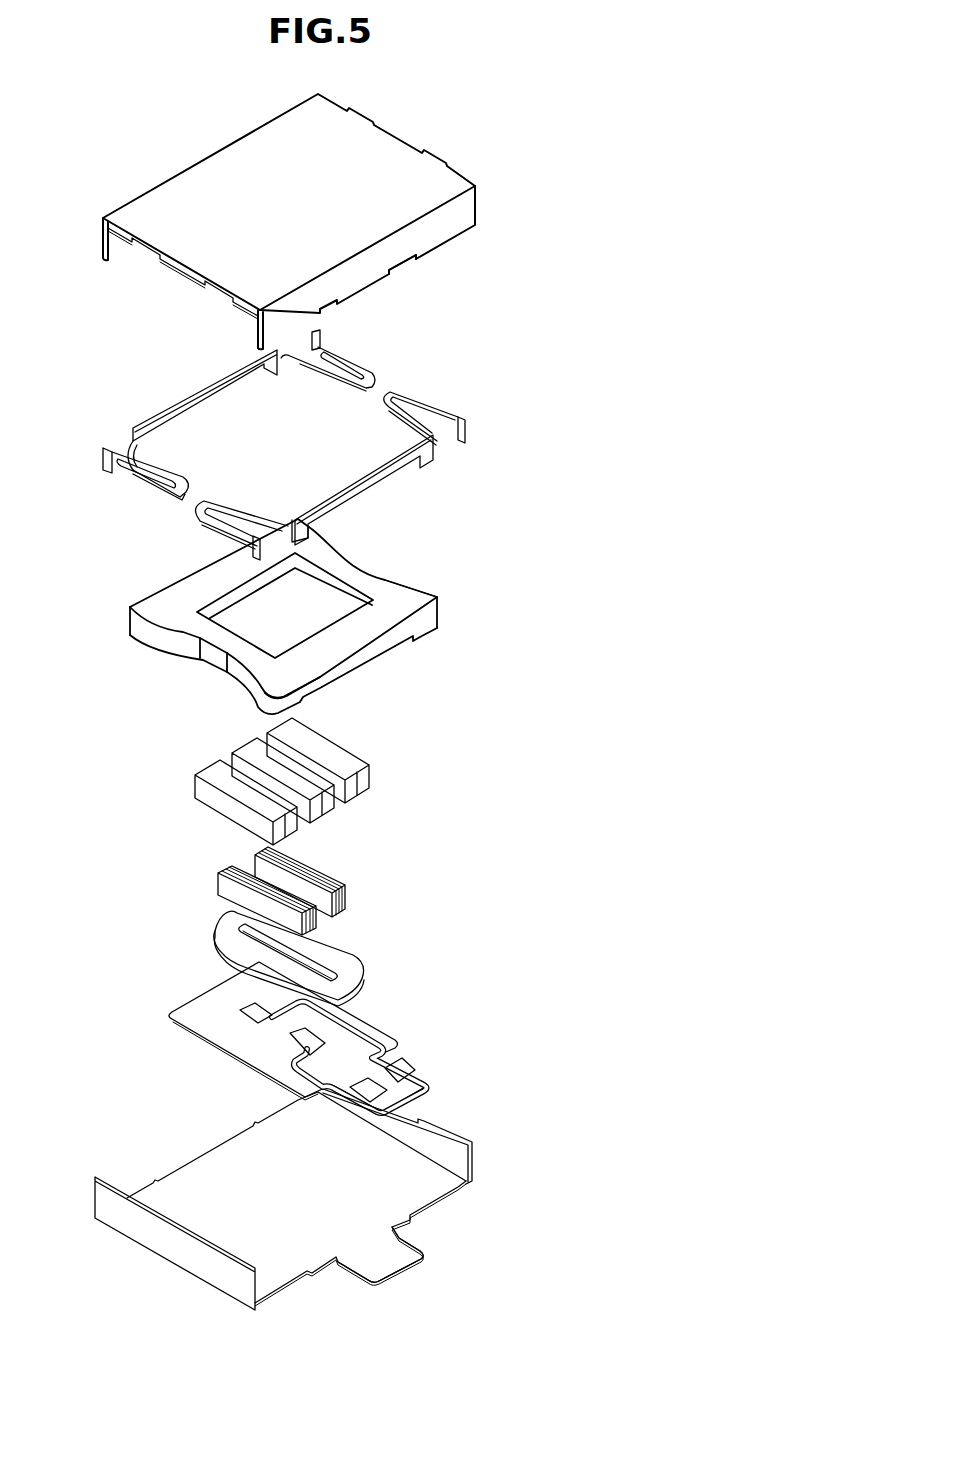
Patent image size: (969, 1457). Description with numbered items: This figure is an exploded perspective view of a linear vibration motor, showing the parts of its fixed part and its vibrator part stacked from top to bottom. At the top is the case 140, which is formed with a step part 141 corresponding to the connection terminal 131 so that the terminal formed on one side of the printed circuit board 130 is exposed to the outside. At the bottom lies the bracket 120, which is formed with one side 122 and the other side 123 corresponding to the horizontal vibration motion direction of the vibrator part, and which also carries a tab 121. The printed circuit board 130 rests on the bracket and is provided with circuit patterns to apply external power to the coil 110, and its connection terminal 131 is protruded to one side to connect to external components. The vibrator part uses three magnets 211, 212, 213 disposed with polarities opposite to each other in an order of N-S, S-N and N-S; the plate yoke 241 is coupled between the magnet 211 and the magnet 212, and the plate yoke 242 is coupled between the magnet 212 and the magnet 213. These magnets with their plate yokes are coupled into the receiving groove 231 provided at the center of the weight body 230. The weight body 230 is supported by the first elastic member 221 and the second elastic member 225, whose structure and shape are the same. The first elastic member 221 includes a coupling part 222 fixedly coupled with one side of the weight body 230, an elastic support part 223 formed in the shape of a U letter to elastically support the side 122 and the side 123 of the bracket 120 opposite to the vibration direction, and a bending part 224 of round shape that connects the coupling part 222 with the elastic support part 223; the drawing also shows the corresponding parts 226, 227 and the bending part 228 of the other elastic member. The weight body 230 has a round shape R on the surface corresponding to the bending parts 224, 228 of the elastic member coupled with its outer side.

The case 140 is at (498, 190).
The step part 141 is at (390, 273).
The coil 110 is at (383, 973).
The bracket 120 is at (318, 1199).
The base terminal tab 121 is at (405, 1250).
The side of the bracket 122 is at (182, 1243).
The side of the bracket 123 is at (456, 1142).
The printed circuit board 130 is at (348, 1038).
The connection terminal 131 is at (408, 1078).
The magnet 211 is at (333, 798).
The magnet 212 is at (357, 782).
The magnet 213 is at (356, 757).
The first elastic member 221 is at (455, 397).
The coupling part 222 is at (367, 484).
The elastic support part 223 is at (213, 527).
The bending part 224 is at (284, 528).
The second elastic member 225 is at (370, 356).
The spring support plate 226 is at (190, 398).
The spring 227 is at (140, 480).
The bending part 228 is at (131, 447).
The weight body 230 is at (330, 616).
The receiving groove 231 is at (287, 620).
The plate yoke 241 is at (312, 925).
The plate yoke 242 is at (340, 884).
The round shape R is at (439, 599).